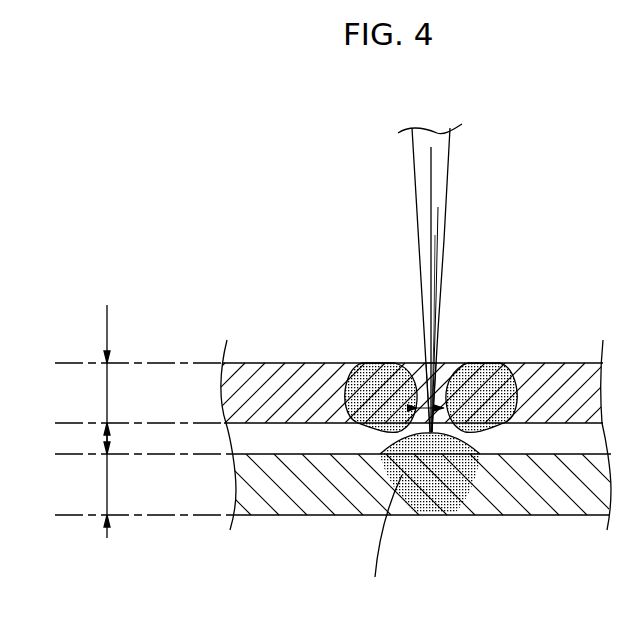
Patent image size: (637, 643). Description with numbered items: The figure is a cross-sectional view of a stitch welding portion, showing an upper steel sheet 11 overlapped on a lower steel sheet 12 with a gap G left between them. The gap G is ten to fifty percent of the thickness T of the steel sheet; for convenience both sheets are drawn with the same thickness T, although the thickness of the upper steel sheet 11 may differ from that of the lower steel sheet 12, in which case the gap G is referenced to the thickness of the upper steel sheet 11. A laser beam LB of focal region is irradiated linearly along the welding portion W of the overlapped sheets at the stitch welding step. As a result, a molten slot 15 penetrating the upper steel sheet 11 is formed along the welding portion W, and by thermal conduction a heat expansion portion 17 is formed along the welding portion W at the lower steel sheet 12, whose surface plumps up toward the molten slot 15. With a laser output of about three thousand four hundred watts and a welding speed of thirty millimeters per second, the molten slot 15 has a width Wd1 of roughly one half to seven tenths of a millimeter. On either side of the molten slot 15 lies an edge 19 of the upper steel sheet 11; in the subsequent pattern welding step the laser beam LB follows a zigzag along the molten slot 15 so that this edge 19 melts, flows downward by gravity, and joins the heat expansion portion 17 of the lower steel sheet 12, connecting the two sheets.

The upper steel sheet 11 is at (553, 387).
The lower steel sheet 12 is at (532, 490).
The molten slot 15 is at (411, 356).
The heat expansion portion 17 is at (457, 494).
The edge 19 is at (390, 362).
The laser beam LB is at (447, 172).
The welding portion W is at (450, 353).
The width of the molten slot Wd1 is at (374, 539).
The thickness of the steel sheet T is at (107, 393).
The gap G is at (107, 440).